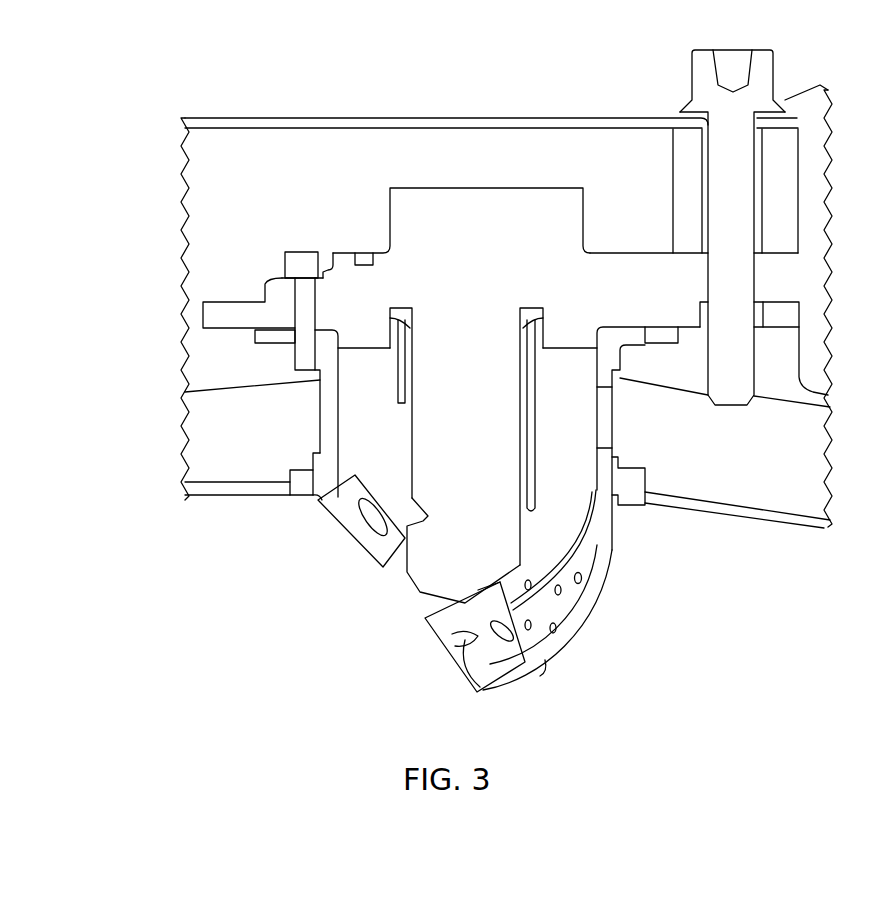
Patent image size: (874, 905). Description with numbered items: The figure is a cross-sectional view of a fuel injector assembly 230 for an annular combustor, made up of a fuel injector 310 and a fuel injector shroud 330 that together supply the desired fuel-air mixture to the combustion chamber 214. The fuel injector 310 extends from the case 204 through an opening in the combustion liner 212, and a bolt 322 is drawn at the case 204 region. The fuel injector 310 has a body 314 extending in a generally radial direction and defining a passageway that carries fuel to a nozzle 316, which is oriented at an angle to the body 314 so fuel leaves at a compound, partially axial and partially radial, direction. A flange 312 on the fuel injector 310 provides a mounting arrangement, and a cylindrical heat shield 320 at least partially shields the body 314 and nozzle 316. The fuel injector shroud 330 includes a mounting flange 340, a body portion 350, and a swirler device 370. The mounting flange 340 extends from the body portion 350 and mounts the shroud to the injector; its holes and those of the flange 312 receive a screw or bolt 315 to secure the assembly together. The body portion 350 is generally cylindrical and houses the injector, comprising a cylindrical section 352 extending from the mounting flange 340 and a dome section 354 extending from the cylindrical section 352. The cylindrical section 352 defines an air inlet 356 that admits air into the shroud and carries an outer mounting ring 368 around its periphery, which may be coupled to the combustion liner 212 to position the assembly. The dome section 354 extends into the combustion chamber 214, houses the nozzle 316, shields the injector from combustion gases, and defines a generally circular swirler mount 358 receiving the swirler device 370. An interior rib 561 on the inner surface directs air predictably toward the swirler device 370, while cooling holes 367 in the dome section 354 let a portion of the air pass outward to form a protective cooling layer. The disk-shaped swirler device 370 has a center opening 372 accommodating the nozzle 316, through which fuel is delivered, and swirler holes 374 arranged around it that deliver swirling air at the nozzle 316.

The case 204 is at (232, 119).
The combustion liner 212 is at (732, 498).
The combustion chamber 214 is at (249, 737).
The fuel injector assembly 230 is at (78, 108).
The fuel injector 310 is at (364, 216).
The flange 312 is at (265, 290).
The body 314 is at (396, 468).
The screw or bolt 315 is at (284, 262).
The nozzle 316 is at (400, 595).
The cylindrical heat shield 320 is at (532, 368).
The bolt 322 is at (762, 62).
The fuel injector shroud 330 is at (266, 406).
The mounting flange 340 is at (255, 335).
The body portion 350 is at (312, 437).
The cylindrical section 352 is at (330, 392).
The dome section 354 is at (594, 644).
The air inlet 356 is at (612, 402).
The swirler mount 358 is at (316, 500).
The cooling holes 367 is at (584, 575).
The outer mounting ring 368 is at (618, 480).
The swirler device 370 is at (362, 560).
The center opening 372 is at (426, 618).
The swirler holes 374 is at (480, 687).
The interior rib 561 is at (590, 528).